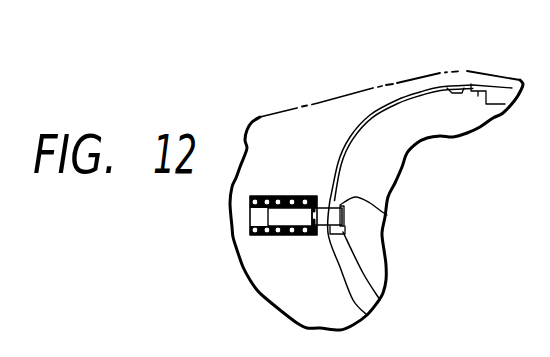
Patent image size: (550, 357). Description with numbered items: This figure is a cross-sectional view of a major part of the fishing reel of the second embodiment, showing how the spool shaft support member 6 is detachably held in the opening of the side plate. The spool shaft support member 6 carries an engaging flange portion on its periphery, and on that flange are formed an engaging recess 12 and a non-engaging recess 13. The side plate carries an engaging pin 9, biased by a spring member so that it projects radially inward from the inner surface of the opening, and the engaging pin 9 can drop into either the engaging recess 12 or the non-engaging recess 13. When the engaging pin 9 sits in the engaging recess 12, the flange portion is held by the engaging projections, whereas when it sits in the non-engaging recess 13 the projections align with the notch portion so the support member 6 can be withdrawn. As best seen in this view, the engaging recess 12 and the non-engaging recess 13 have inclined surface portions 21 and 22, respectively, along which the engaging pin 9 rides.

The spool shaft support member 6 is at (384, 181).
The engaging pin 9 is at (298, 222).
The engaging recess 12 is at (345, 222).
The non-engaging recess 13 is at (472, 91).
The inclined surface portion 21 is at (387, 215).
The inclined surface portion 22 is at (457, 93).